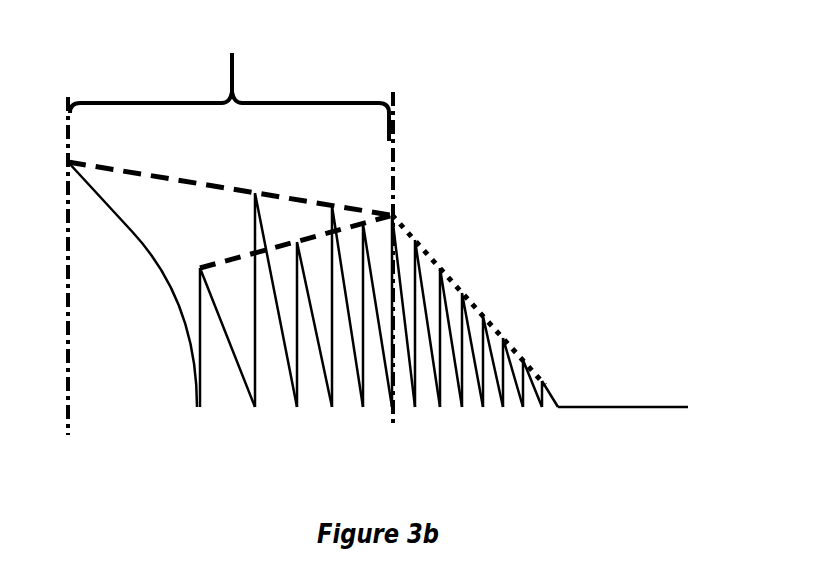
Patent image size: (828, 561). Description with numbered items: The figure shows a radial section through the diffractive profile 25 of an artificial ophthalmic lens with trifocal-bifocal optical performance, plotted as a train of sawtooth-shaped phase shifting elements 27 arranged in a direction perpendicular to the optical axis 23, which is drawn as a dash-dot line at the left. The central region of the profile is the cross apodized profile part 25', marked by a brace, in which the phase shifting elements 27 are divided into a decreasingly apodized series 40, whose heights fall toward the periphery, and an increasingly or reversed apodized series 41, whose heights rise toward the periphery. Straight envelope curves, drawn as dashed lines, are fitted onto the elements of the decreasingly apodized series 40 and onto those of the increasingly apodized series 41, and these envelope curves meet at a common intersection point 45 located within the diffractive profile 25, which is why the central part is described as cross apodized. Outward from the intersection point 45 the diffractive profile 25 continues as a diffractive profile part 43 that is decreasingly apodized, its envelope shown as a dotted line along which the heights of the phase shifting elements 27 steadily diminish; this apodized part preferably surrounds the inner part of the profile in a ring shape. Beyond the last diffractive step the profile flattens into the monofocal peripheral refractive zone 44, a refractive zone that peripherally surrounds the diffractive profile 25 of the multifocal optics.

The optical axis 23 is at (66, 252).
The cross apodized profile part 25' is at (229, 83).
The diffractive profile 25 is at (454, 223).
The decreasingly apodized series 40 is at (172, 172).
The increasingly apodized series 41 is at (210, 255).
The phase shifting elements 27 is at (296, 230).
The common intersection point 45 is at (396, 196).
The apodized diffractive profile part 43 is at (462, 265).
The peripheral refractive zone 44 is at (606, 395).